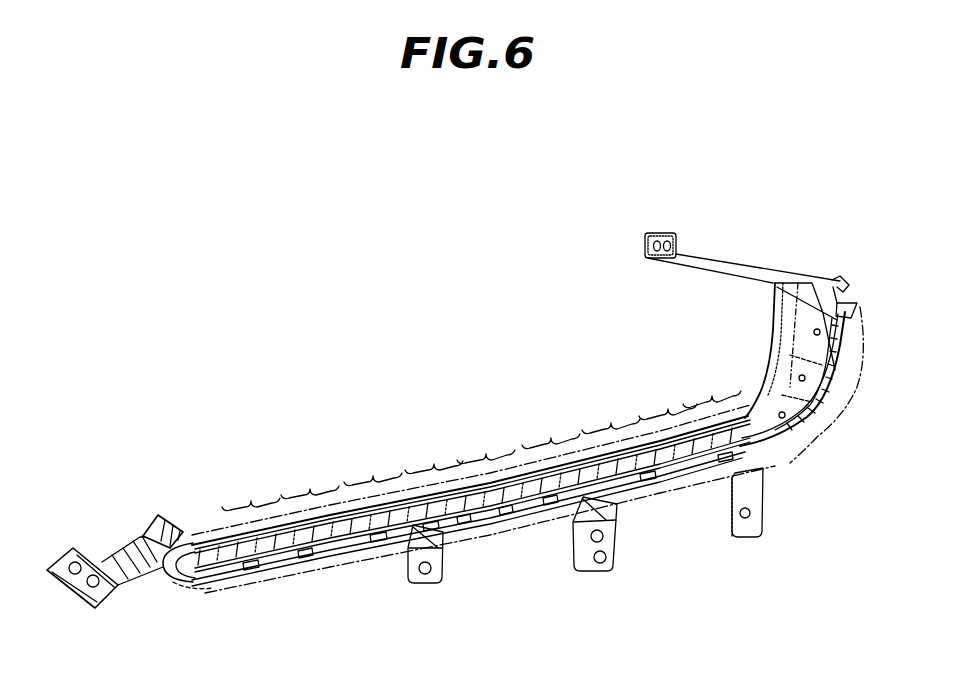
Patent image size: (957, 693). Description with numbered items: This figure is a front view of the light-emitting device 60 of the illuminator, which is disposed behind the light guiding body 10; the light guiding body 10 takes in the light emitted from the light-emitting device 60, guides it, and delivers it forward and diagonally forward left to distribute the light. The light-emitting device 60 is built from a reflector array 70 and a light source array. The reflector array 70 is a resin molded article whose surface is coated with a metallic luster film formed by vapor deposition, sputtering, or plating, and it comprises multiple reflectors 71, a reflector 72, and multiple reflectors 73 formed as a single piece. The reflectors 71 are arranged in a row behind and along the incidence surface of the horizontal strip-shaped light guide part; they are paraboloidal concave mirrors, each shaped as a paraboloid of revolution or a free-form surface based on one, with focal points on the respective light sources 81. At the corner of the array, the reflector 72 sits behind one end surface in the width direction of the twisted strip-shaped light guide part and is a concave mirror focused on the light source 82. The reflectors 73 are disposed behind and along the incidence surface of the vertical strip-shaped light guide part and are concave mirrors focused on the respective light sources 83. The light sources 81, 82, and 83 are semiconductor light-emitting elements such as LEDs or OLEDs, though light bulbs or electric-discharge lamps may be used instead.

The light guiding body 10 is at (327, 571).
The light-emitting device 60 is at (300, 295).
The reflector array 70 is at (174, 575).
The reflectors 71 is at (481, 441).
The reflector 72 is at (770, 423).
The reflectors 73 is at (850, 388).
The light sources 81 is at (303, 558).
The light source 82 is at (790, 440).
The light sources 83 is at (799, 376).